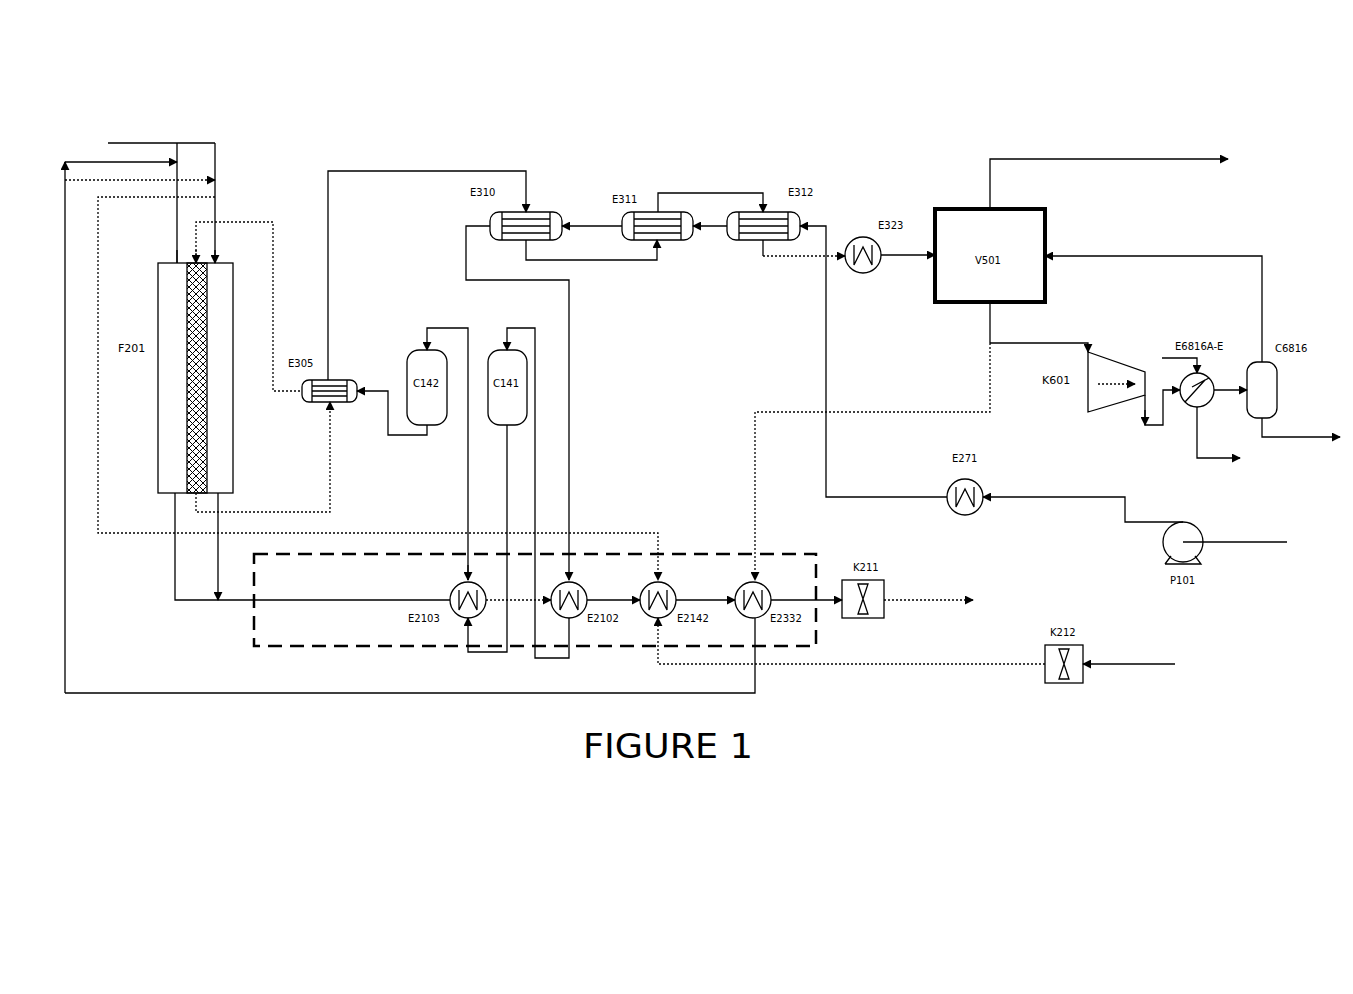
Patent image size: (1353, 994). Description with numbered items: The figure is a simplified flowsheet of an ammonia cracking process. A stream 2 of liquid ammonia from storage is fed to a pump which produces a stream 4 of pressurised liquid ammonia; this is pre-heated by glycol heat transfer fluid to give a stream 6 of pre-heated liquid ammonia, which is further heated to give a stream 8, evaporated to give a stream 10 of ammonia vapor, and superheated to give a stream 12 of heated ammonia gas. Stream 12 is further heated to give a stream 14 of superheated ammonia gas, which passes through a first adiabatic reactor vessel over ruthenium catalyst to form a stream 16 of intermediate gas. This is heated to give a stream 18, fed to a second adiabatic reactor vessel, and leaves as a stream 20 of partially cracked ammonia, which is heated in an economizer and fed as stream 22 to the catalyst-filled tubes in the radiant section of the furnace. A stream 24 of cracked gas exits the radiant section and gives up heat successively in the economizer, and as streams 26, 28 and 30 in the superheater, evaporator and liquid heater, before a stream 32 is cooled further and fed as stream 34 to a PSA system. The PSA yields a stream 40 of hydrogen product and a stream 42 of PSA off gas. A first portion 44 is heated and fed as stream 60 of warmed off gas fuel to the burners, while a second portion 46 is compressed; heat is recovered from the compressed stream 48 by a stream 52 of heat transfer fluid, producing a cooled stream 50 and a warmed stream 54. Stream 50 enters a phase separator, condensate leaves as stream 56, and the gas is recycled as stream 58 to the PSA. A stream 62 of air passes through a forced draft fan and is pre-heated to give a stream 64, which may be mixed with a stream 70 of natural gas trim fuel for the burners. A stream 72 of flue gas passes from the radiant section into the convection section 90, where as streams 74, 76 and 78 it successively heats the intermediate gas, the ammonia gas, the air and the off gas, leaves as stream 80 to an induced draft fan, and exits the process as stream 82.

The stream of liquid ammonia 2 is at (1245, 540).
The stream of pressurised liquid ammonia 4 is at (1046, 494).
The stream of pre-heated liquid ammonia 6 is at (826, 480).
The stream of further heated liquid ammonia 8 is at (715, 228).
The stream of ammonia vapor 10 is at (607, 226).
The stream of heated ammonia gas 12 is at (464, 249).
The stream of superheated ammonia gas 14 is at (525, 330).
The stream of intermediate gas 16 is at (507, 490).
The stream of superheated intermediate gas 18 is at (468, 487).
The stream of partially cracked ammonia gas 20 is at (412, 441).
The stream of partially cracked ammonia fed to furnace tubes 22 is at (290, 394).
The stream of cracked gas 24 is at (330, 490).
The stream of cracked gas 26 is at (327, 262).
The stream of cracked gas 28 is at (648, 264).
The stream of cracked gas 30 is at (722, 186).
The stream of cracked gas 32 is at (790, 260).
The stream of cooled cracked gas 34 is at (908, 262).
The stream of hydrogen gas 40 is at (1108, 152).
The stream of PSA off gas 42 is at (987, 338).
The first portion of PSA off gas 44 is at (987, 379).
The second portion of PSA off gas 46 is at (1055, 337).
The stream of compressed PSA off gas 48 is at (1160, 426).
The stream of cooled compressed PSA off gas 50 is at (1240, 396).
The stream of heat transfer fluid 52 is at (1166, 358).
The stream of warmed heat transfer fluid 54 is at (1216, 460).
The condensate stream 56 is at (1310, 441).
The recycle stream of compressed PSA off gas 58 is at (1210, 259).
The stream of warmed PSA off gas fuel 60 is at (240, 693).
The stream of air 62 is at (1135, 664).
The stream of pre-heated air 64 is at (140, 536).
The stream of natural gas 70 is at (128, 133).
The stream of flue gas 72 is at (236, 600).
The stream of flue gas 74 is at (514, 602).
The stream of cooled flue gas 76 is at (620, 598).
The stream of further cooled flue gas 78 is at (708, 598).
The stream of cooled flue gas leaving convection section 80 is at (800, 598).
The flue gas exit stream 82 is at (918, 597).
The convection section 90 is at (370, 648).